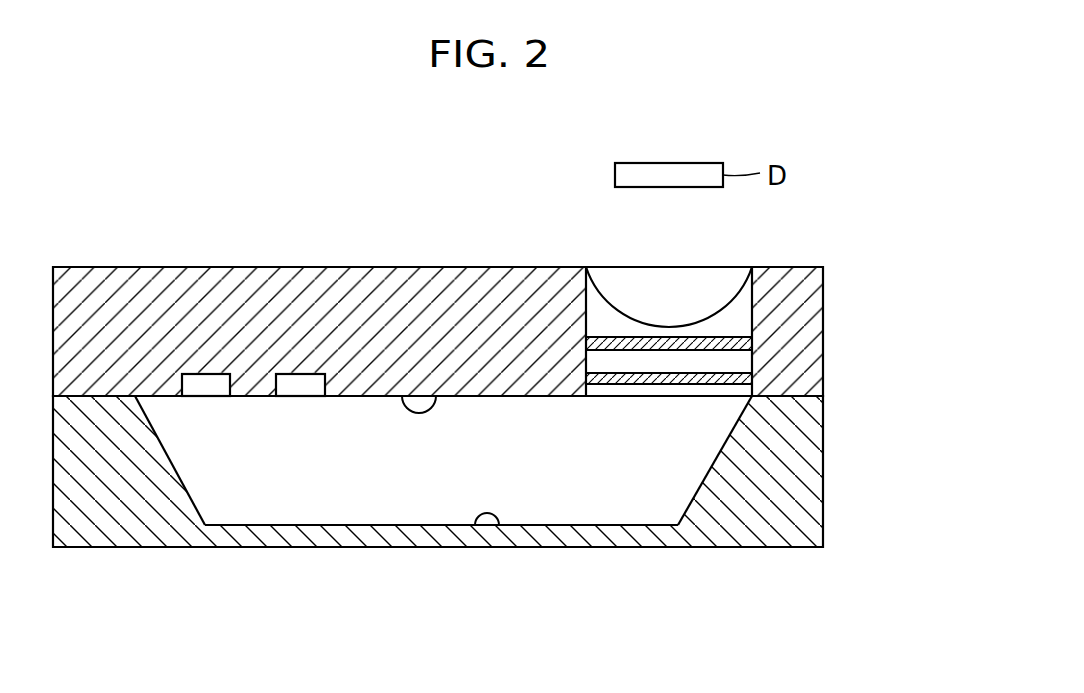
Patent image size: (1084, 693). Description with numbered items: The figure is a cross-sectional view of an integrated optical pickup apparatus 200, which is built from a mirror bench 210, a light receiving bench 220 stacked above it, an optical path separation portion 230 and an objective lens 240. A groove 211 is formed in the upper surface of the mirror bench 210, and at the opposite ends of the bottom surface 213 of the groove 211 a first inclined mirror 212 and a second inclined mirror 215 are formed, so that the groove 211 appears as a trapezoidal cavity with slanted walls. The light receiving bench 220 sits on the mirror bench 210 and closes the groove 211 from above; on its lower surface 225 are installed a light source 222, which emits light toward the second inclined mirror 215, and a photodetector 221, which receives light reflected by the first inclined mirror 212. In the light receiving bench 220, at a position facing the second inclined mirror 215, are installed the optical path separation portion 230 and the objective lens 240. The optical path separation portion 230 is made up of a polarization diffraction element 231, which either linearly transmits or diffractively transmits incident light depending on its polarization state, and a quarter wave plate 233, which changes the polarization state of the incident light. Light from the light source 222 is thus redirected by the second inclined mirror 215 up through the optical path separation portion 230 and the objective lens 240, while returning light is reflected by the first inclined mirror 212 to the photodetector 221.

The integrated optical pickup apparatus 200 is at (477, 459).
The mirror bench 210 is at (805, 485).
The groove 211 is at (378, 497).
The first inclined mirror 212 is at (177, 470).
The bottom surface 213 is at (497, 525).
The second inclined mirror 215 is at (723, 442).
The light receiving bench 220 is at (804, 292).
The photodetector 221 is at (212, 385).
The light source 222 is at (308, 376).
The lower surface 225 is at (436, 396).
The optical path separation portion 230 is at (762, 358).
The polarization diffraction element 231 is at (738, 379).
The quarter wave plate 233 is at (733, 345).
The objective lens 240 is at (679, 290).